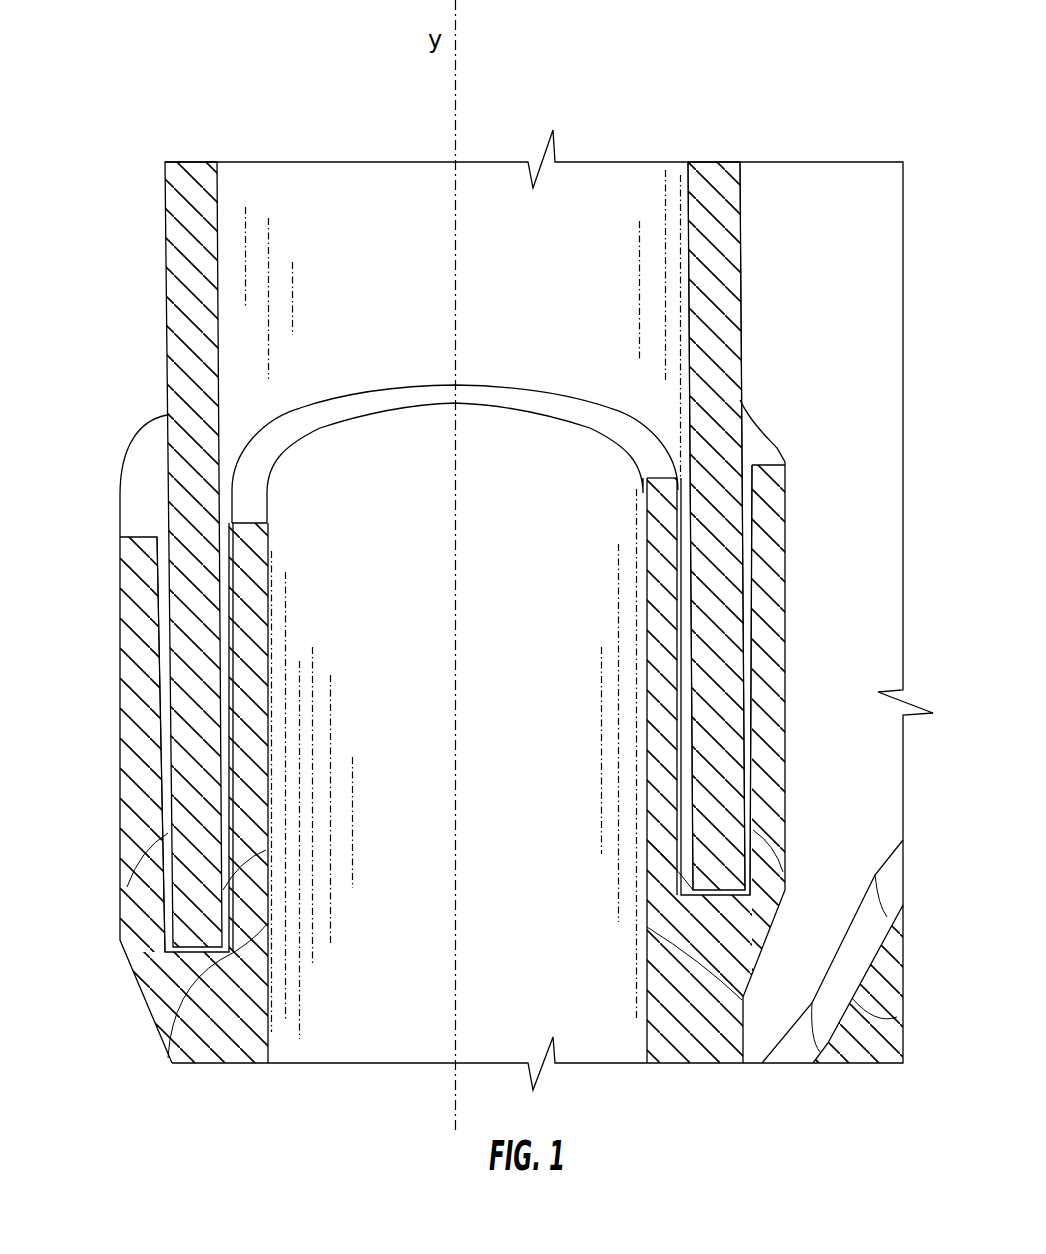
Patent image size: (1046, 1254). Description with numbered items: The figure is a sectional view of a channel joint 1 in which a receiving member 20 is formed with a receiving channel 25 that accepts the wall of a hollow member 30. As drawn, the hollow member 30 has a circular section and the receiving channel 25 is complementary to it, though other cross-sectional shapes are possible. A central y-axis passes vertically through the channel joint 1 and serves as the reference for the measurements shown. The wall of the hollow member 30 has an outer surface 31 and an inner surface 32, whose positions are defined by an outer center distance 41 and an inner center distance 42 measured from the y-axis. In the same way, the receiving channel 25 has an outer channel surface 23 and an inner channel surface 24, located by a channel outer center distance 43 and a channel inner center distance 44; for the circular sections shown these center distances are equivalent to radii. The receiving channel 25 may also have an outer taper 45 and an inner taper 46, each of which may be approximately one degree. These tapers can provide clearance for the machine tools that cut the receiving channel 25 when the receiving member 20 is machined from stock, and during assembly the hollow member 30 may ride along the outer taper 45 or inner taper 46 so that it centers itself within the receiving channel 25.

The channel joint 1 is at (190, 92).
The receiving member 20 is at (780, 735).
The outer channel surface 23 is at (755, 582).
The inner channel surface 24 is at (230, 620).
The receiving channel 25 is at (158, 532).
The hollow member 30 is at (725, 247).
The outer surface 31 is at (742, 388).
The inner surface 32 is at (692, 355).
The outer center distance 41 is at (740, 105).
The inner center distance 42 is at (455, 110).
The channel outer center distance 43 is at (756, 310).
The channel inner center distance 44 is at (674, 350).
The outer taper 45 is at (168, 400).
The inner taper 46 is at (190, 418).